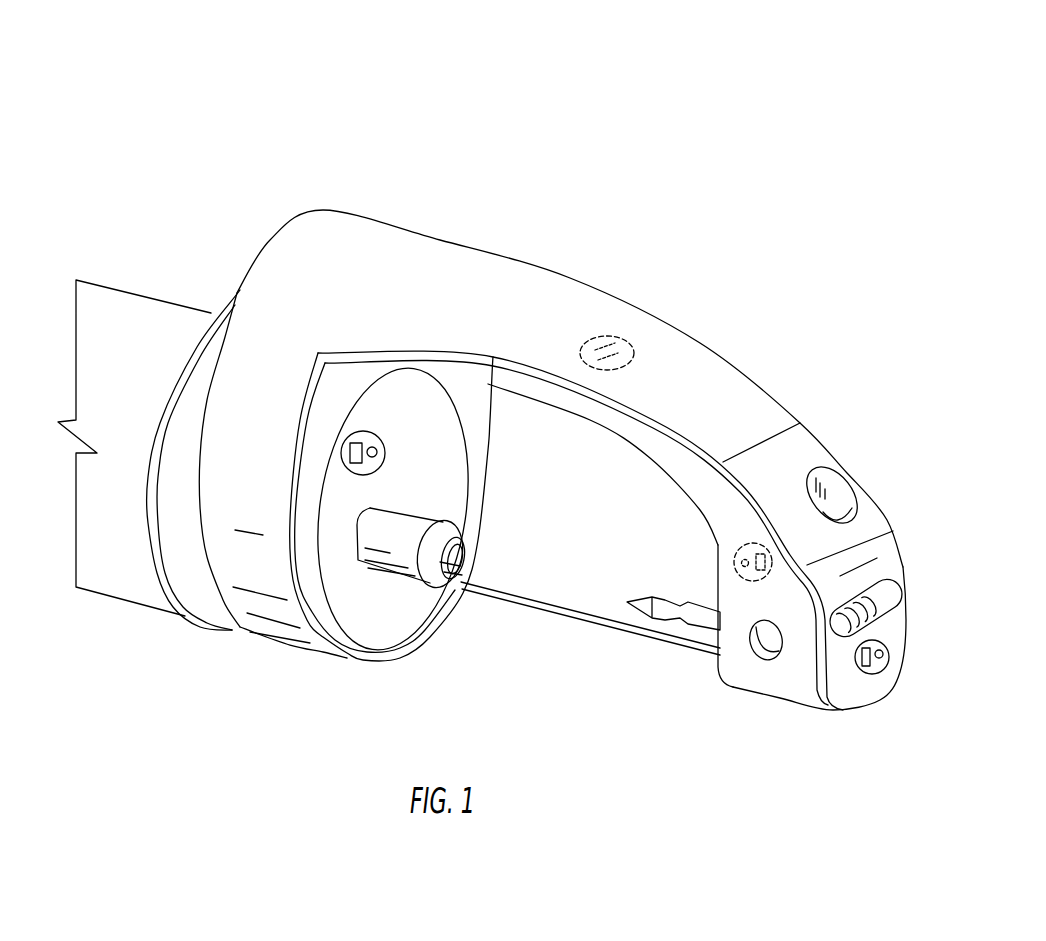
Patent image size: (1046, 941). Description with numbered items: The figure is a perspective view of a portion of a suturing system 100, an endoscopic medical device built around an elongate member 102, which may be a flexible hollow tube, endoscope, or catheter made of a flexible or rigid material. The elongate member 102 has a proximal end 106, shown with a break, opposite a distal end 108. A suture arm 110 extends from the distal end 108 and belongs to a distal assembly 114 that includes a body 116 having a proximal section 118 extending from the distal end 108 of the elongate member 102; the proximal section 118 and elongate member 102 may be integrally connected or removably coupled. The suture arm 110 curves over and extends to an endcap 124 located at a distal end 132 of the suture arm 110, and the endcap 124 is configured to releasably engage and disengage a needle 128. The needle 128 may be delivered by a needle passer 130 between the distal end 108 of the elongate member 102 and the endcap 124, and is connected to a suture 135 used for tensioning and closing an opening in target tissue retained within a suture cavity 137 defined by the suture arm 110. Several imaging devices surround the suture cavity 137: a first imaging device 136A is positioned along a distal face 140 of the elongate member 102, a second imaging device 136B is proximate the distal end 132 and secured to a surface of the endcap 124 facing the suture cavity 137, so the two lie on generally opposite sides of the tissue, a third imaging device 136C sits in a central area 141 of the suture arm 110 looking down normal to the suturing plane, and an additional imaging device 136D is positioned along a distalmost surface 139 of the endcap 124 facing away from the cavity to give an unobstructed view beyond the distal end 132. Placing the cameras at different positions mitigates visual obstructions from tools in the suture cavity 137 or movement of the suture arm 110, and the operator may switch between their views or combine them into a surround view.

The system 100 is at (441, 95).
The elongate member 102 is at (150, 286).
The proximal end 106 is at (66, 304).
The distal end 108 is at (376, 670).
The suture arm 110 is at (812, 414).
The distal assembly 114 is at (748, 252).
The body 116 is at (570, 278).
The proximal section 118 is at (192, 634).
The endcap 124 is at (895, 620).
The needle 128 is at (652, 600).
The needle passer 130 is at (462, 588).
The distal end of the suture arm 132 is at (895, 682).
The suture 135 is at (611, 628).
The first imaging device 136A is at (394, 461).
The second imaging device 136B is at (730, 562).
The third imaging device 136C is at (605, 375).
The additional imaging device 136D is at (884, 658).
The suture cavity 137 is at (540, 627).
The distalmost surface 139 is at (852, 693).
The distal face 140 is at (437, 440).
The central area 141 is at (701, 351).